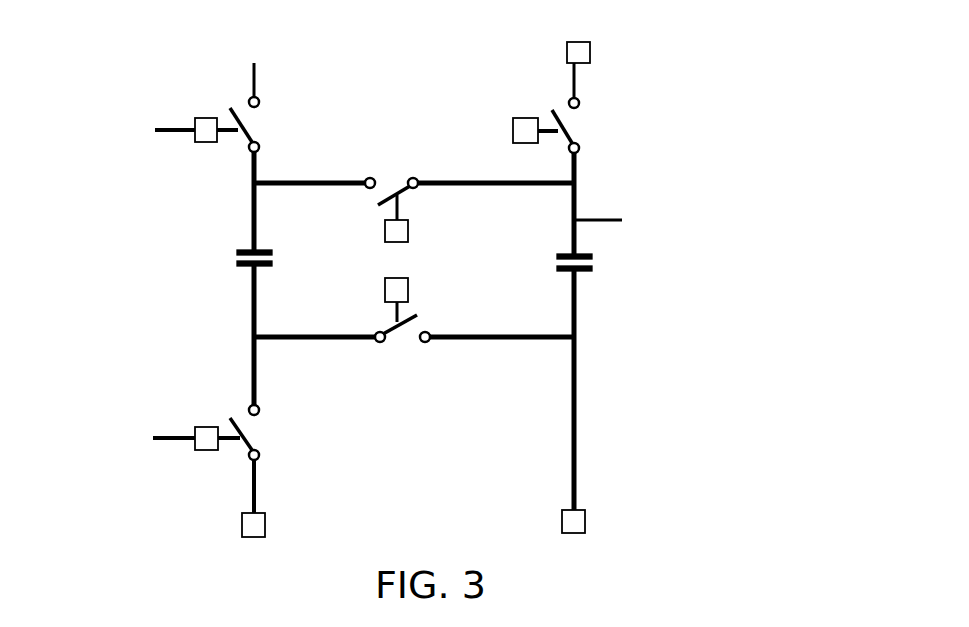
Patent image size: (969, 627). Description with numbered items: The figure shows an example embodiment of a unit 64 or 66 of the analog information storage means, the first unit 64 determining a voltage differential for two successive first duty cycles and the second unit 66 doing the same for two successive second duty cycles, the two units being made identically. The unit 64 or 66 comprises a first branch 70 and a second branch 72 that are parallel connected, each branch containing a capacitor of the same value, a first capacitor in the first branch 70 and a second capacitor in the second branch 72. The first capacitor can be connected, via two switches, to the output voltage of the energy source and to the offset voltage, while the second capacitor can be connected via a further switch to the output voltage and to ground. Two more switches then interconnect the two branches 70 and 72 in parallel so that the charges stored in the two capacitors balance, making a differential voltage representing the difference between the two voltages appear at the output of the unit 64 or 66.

The first branch 70 is at (178, 330).
The second branch 72 is at (617, 163).
The first unit 64 is at (670, 420).
The second unit 66 is at (689, 416).